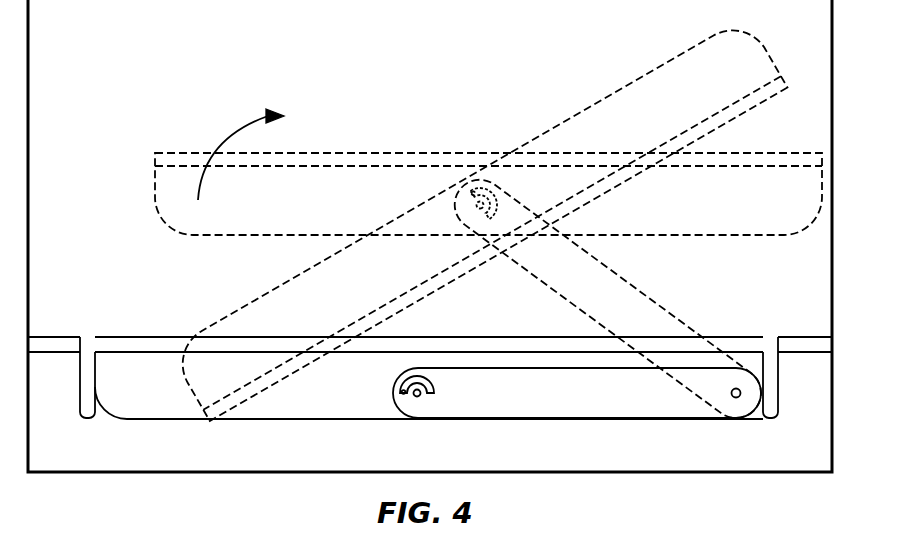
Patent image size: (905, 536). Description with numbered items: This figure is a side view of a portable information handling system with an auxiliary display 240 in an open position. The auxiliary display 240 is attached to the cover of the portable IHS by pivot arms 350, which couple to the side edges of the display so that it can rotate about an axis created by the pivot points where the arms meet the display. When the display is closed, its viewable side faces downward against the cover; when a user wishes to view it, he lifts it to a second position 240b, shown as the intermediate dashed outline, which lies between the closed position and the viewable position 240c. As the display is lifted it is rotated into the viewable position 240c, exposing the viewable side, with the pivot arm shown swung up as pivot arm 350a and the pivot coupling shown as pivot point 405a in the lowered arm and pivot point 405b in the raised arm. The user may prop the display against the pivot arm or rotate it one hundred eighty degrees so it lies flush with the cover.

The auxiliary display 240 is at (148, 337).
The second position 240b is at (182, 152).
The viewable position 240c is at (594, 106).
The pivot arms 350 is at (575, 395).
The support arm in raised position 350a is at (633, 312).
The pivot hinge 405a is at (403, 400).
The pivot hinge in raised position 405b is at (457, 205).